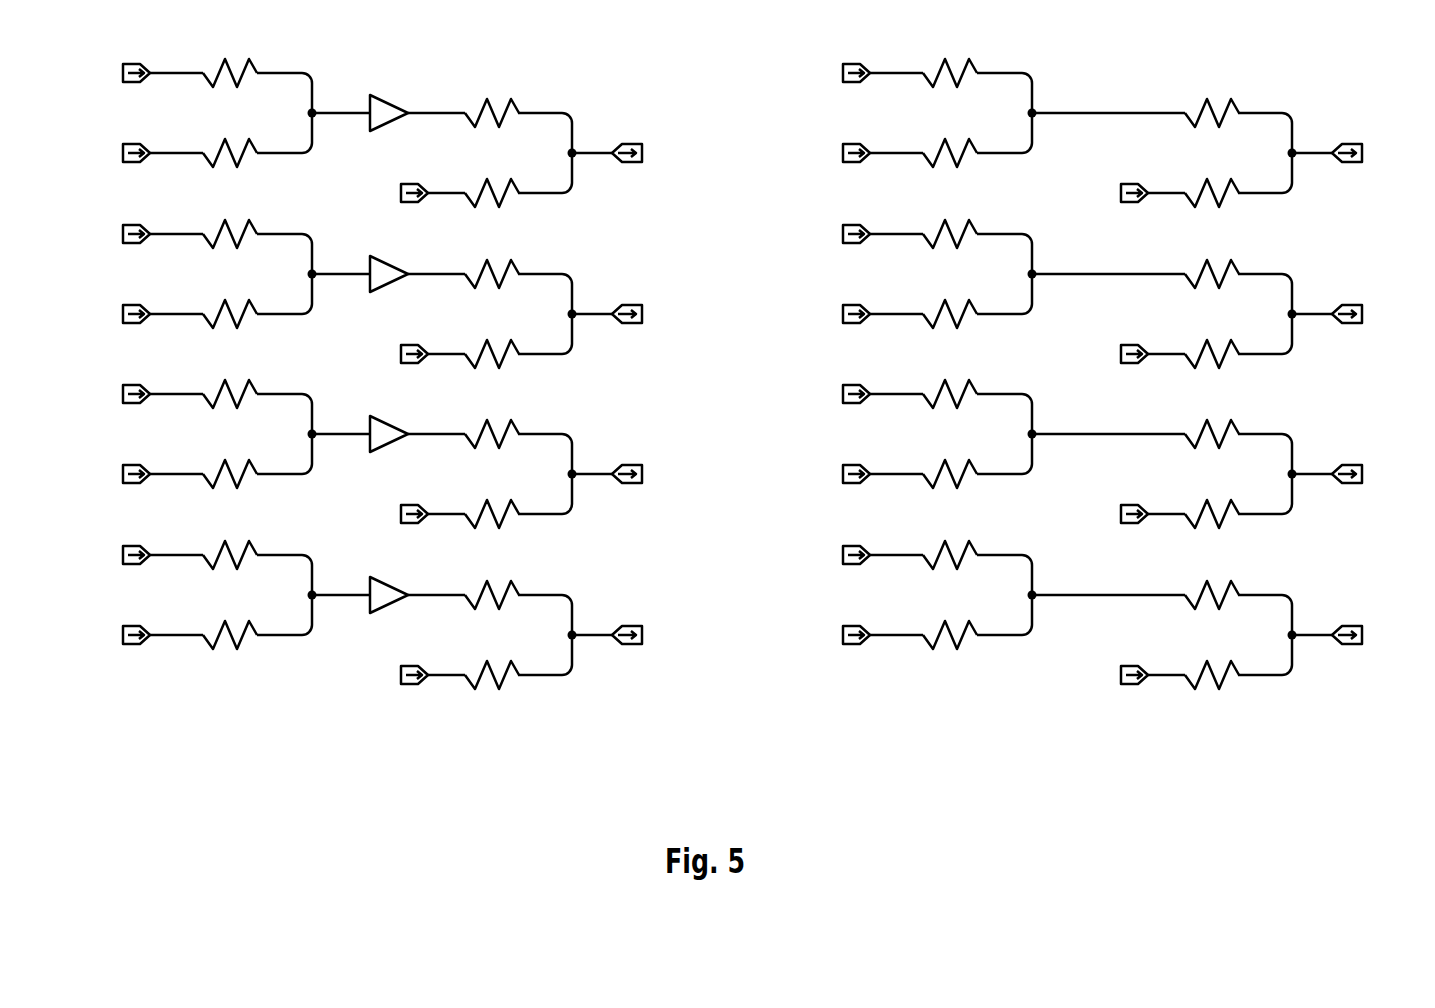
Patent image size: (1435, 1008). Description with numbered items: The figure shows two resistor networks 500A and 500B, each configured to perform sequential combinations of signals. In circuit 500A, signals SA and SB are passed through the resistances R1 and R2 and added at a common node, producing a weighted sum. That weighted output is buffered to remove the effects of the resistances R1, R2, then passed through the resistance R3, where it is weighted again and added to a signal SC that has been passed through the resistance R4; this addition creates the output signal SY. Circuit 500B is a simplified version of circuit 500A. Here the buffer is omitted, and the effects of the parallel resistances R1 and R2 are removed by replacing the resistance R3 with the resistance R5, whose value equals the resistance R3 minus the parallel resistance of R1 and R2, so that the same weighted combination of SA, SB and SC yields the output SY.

The resistance R1 is at (586, 308).
The resistance R2 is at (586, 388).
The resistance R3 is at (488, 347).
The resistance R4 is at (848, 428).
The resistance R5 is at (1208, 347).
The resistor network 500A is at (282, 725).
The resistor network 500B is at (944, 717).